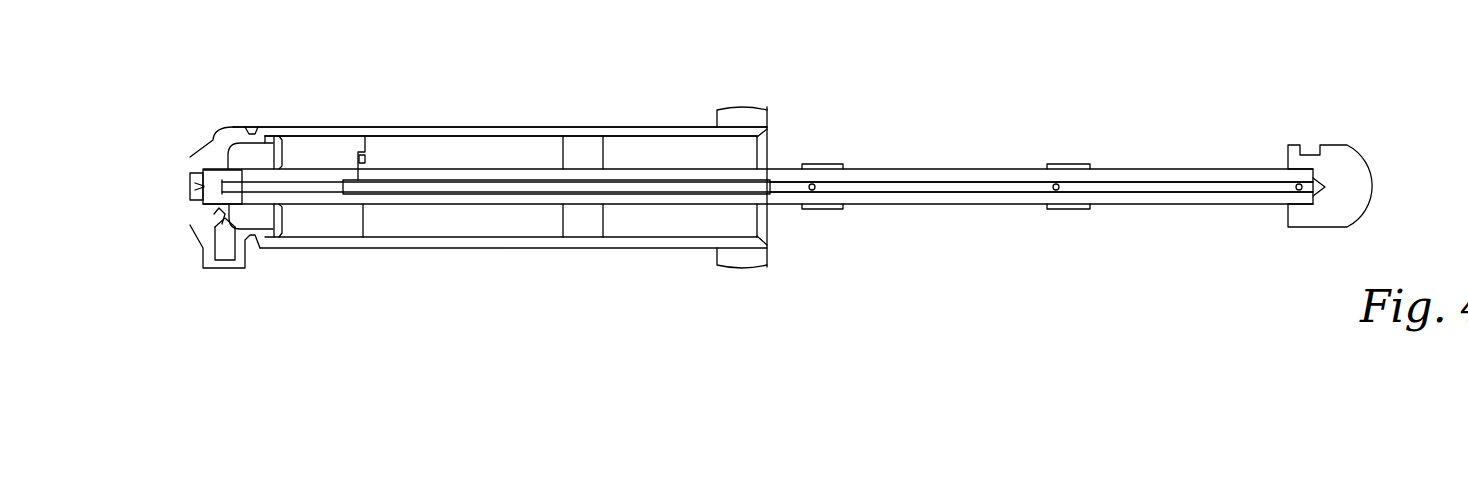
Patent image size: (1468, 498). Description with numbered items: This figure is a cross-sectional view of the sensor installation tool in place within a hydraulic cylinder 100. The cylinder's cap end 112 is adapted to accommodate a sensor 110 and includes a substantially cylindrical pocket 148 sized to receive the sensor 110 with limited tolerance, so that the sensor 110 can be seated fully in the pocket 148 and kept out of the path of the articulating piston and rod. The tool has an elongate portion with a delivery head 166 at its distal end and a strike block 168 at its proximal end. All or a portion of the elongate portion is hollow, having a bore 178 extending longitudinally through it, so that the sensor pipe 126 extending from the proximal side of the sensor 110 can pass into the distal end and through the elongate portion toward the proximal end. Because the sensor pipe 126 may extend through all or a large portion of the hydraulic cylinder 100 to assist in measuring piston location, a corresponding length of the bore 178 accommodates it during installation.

The hydraulic cylinder 100 is at (508, 127).
The sensor 110 is at (190, 177).
The cap end 112 is at (213, 138).
The sensor pipe 126 is at (403, 188).
The pocket 148 is at (223, 160).
The delivery head 166 is at (288, 91).
The strike block 168 is at (1342, 157).
The bore 178 is at (944, 187).